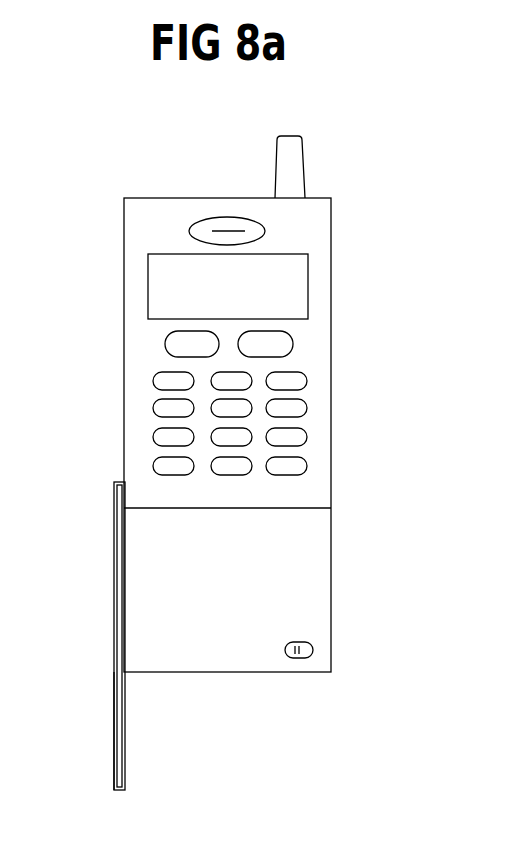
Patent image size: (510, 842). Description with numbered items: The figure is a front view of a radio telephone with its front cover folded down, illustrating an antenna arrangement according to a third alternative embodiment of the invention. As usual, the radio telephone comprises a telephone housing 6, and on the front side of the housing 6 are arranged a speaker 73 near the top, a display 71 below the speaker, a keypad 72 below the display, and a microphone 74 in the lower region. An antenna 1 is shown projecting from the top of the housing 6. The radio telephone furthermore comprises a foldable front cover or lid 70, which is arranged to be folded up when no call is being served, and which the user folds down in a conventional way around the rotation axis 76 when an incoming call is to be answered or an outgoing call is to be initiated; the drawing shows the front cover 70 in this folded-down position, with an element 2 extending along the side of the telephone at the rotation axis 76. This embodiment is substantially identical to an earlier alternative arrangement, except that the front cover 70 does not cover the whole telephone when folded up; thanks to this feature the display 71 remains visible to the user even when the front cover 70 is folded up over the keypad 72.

The antenna 1 is at (287, 171).
The telephone housing 6 is at (318, 228).
The speaker 73 is at (208, 224).
The display 71 is at (292, 284).
The keypad 72 is at (293, 408).
The front cover 70 is at (229, 548).
The microphone 74 is at (306, 651).
The rotation axis 76 is at (114, 494).
The card / strip 2 is at (117, 660).